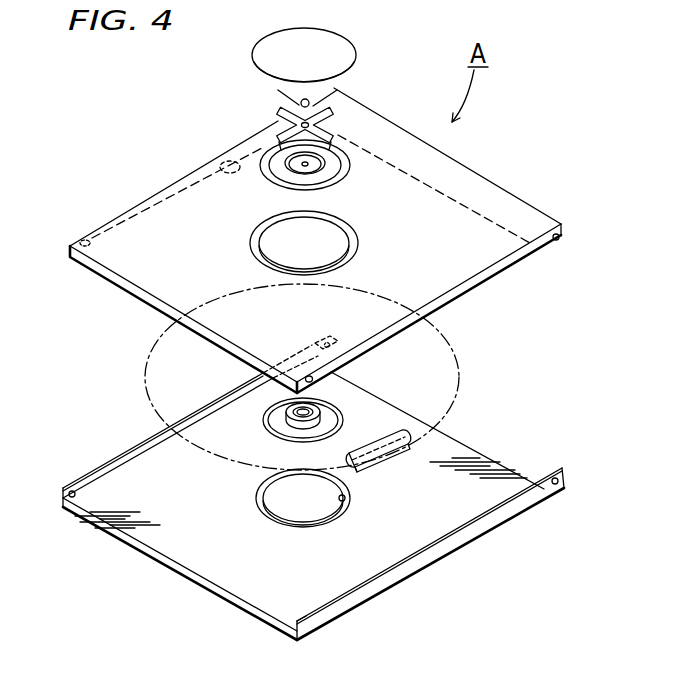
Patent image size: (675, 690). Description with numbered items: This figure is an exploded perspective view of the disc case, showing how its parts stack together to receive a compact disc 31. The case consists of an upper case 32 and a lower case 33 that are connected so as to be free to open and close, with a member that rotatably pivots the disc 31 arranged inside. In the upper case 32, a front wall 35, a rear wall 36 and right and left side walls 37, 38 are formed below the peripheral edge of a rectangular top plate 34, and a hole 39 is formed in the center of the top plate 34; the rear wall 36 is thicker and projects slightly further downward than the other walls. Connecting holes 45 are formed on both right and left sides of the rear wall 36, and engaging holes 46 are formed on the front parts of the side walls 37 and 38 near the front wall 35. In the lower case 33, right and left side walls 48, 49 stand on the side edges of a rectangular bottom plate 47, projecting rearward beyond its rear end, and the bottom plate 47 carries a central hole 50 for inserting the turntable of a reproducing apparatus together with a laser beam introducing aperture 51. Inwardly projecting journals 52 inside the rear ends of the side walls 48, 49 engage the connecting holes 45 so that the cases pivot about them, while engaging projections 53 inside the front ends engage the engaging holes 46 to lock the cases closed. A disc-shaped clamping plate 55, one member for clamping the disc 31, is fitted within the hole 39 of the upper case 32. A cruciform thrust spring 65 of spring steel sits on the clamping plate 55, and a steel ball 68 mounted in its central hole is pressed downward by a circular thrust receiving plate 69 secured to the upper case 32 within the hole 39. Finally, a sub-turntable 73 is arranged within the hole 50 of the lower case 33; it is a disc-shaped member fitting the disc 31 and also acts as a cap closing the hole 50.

The disc 31 is at (458, 360).
The upper case 32 is at (337, 242).
The lower case 33 is at (303, 493).
The top plate 34 is at (432, 252).
The front wall 35 is at (130, 298).
The rear wall 36 is at (568, 224).
The right side wall 37 is at (462, 292).
The left side wall 38 is at (229, 158).
The hole 39 is at (268, 228).
The connecting holes 45 is at (563, 241).
The engaging holes 46 is at (92, 238).
The bottom plate 47 is at (306, 591).
The right side wall 48 is at (400, 580).
The left side wall 49 is at (116, 453).
The hole 50 is at (346, 497).
The laser beam introducing aperture 51 is at (378, 441).
The journals 52 is at (331, 345).
The engaging projections 53 is at (70, 488).
The clamping plate 55 is at (350, 166).
The thrust spring 65 is at (340, 113).
The steel ball 68 is at (298, 104).
The thrust receiving plate 69 is at (280, 40).
The sub-turntable 73 is at (264, 434).